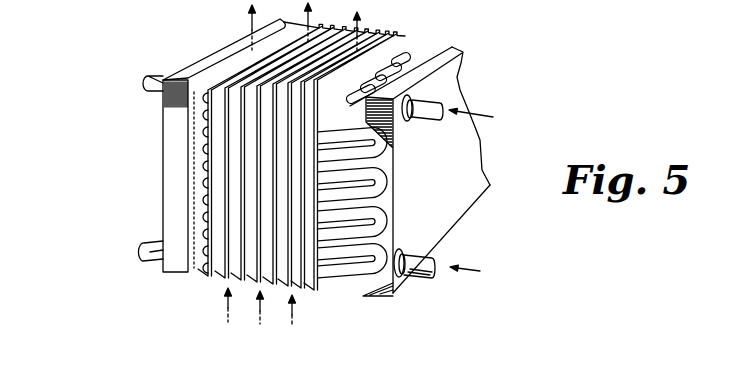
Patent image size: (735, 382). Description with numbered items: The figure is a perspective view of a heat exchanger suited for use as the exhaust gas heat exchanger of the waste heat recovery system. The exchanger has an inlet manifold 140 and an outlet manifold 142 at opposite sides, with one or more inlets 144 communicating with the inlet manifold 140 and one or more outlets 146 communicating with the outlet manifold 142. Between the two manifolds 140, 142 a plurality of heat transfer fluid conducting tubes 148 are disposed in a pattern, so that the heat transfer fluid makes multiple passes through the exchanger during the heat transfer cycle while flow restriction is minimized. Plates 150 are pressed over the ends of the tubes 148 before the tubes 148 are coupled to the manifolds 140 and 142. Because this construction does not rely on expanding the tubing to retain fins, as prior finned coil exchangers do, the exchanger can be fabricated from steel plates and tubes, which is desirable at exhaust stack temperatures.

The inlet manifold 140 is at (457, 202).
The outlet manifold 142 is at (172, 167).
The inlet 144 is at (437, 97).
The outlet 146 is at (158, 78).
The heat transfer fluid conducting tube 148 is at (358, 264).
The plate 150 is at (213, 274).